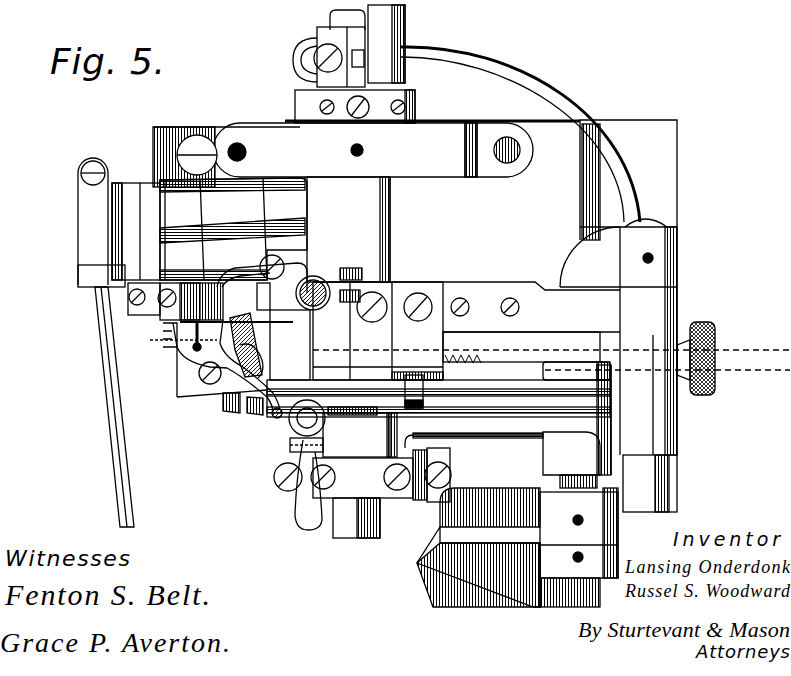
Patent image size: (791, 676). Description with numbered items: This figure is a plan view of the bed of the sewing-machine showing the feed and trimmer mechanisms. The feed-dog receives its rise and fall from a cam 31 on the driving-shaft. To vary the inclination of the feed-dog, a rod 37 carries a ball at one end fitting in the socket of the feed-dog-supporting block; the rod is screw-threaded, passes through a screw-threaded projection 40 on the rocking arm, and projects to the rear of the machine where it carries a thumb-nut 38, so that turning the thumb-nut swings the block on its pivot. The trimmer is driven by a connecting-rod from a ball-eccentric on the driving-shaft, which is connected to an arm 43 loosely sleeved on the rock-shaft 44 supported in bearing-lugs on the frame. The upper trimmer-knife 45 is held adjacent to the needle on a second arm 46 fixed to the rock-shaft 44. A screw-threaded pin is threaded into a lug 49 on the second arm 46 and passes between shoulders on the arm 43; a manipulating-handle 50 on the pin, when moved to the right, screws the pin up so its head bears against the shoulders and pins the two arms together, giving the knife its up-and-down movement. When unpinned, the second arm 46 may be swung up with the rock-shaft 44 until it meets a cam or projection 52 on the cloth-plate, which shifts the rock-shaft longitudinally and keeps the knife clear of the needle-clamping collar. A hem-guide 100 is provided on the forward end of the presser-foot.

The cam 31 is at (398, 505).
The rod 37 is at (505, 362).
The thumb-nut 38 is at (712, 347).
The screw-threaded projection 40 is at (445, 332).
The arm 43 is at (514, 428).
The rock-shaft 44 is at (577, 597).
The upper trimmer-knife 45 is at (175, 348).
The second arm 46 is at (478, 393).
The lug 49 is at (275, 416).
The manipulating-handle 50 is at (303, 513).
The cam or projection 52 is at (420, 378).
The hem-guide 100 is at (209, 336).